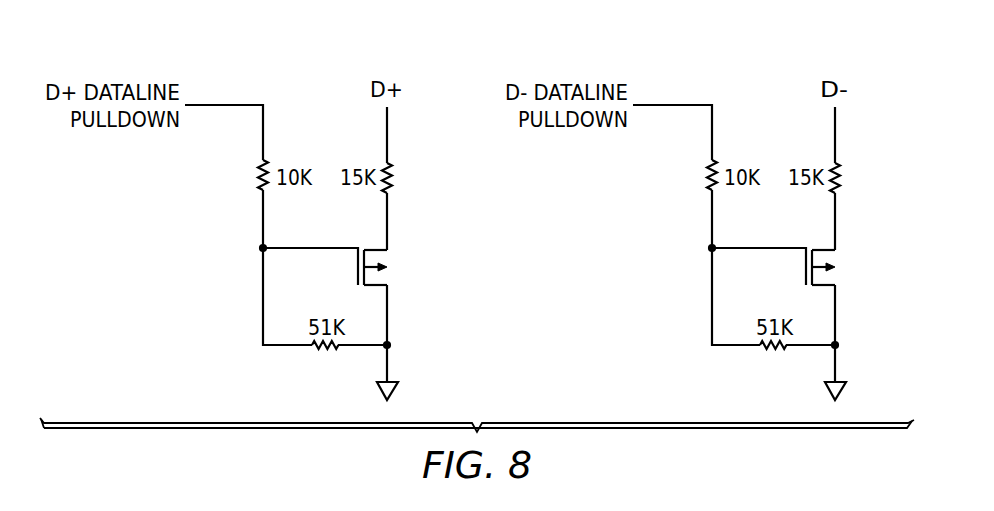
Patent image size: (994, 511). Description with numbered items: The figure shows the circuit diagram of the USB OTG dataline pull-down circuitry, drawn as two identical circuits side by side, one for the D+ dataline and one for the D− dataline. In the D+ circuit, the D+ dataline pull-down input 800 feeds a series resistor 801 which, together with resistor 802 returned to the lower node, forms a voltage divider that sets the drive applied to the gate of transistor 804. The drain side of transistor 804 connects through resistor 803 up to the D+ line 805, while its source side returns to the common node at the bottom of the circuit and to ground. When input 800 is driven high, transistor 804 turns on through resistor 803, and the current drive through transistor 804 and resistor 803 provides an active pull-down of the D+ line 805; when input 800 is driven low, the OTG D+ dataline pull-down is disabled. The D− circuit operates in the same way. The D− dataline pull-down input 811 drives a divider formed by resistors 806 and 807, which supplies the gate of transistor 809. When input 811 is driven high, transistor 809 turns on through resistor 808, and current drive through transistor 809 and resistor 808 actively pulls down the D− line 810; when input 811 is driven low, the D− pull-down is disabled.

The input 800 is at (226, 103).
The resistor 801 is at (262, 174).
The resistor 802 is at (322, 350).
The resistor 803 is at (392, 168).
The transistor 804 is at (356, 272).
The D+ line 805 is at (389, 130).
The resistor 806 is at (677, 168).
The resistor 807 is at (762, 374).
The resistor 808 is at (870, 170).
The transistor 809 is at (773, 273).
The D− line 810 is at (871, 134).
The input 811 is at (672, 104).